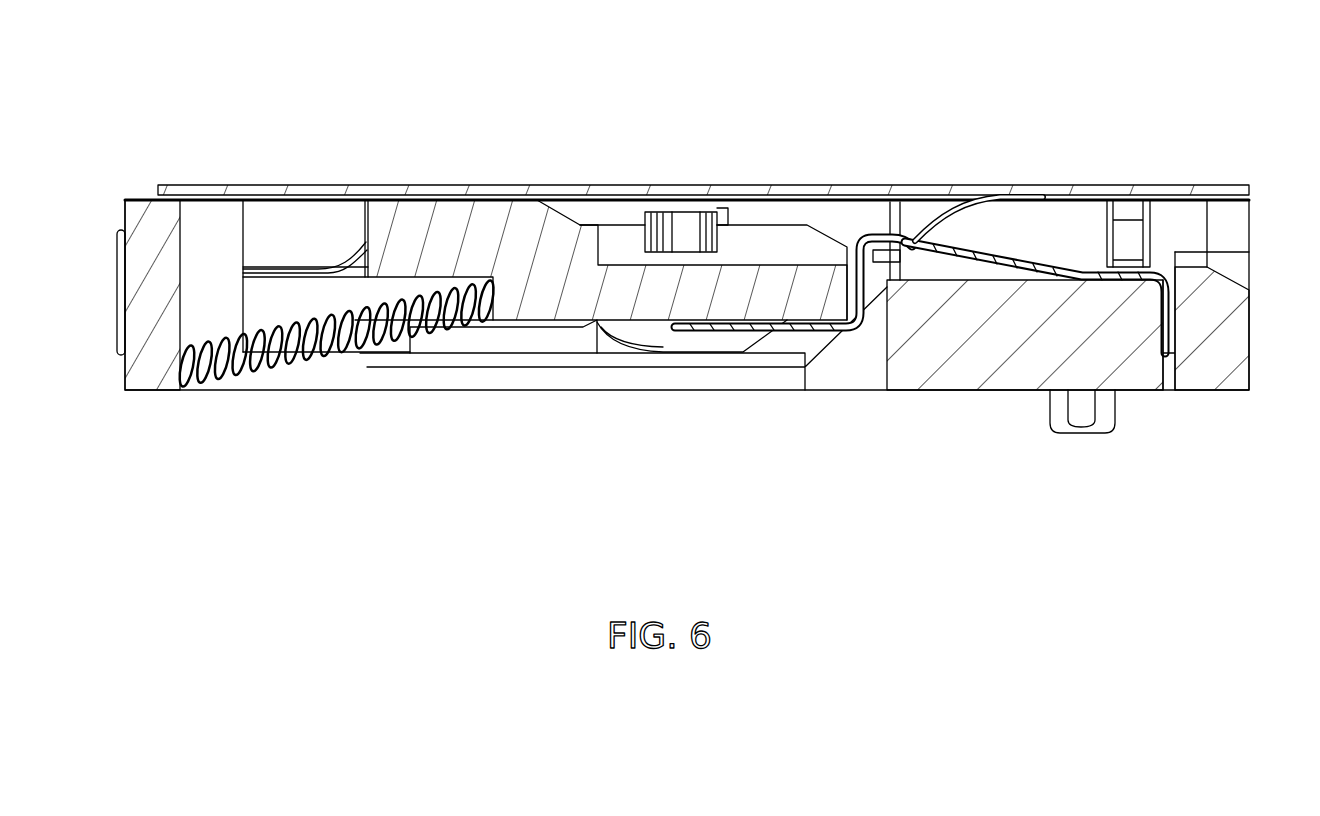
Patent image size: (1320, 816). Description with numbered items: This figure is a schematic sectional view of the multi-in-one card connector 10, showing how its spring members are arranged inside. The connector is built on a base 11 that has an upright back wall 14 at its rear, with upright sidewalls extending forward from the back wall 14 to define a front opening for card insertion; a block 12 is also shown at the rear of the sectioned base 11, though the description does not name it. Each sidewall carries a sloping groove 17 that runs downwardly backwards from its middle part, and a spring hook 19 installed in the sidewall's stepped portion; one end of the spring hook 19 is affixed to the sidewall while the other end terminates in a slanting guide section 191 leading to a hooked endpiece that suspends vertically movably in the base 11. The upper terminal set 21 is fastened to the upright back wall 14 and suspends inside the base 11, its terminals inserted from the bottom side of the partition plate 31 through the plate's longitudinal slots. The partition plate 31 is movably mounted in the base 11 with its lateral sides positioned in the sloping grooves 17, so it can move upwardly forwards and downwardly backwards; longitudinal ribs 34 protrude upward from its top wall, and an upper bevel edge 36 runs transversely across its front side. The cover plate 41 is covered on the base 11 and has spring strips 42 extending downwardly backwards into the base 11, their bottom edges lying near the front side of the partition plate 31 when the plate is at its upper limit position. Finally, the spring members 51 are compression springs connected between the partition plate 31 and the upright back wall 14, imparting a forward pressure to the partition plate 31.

The multi-in-one card connector 10 is at (460, 438).
The base 11 is at (155, 393).
The rear insulative block 12 is at (980, 392).
The upright back wall 14 is at (130, 372).
The sloping groove 17 is at (862, 215).
The spring hook 19 is at (1037, 248).
The slanting guide section 191 is at (992, 248).
The upper terminal set 21 is at (357, 247).
The partition plate 31 is at (557, 199).
The longitudinal rib 34 is at (678, 216).
The upper bevel edge 36 is at (830, 238).
The cover plate 41 is at (1187, 183).
The spring strip 42 is at (950, 215).
The spring member 51 is at (302, 405).